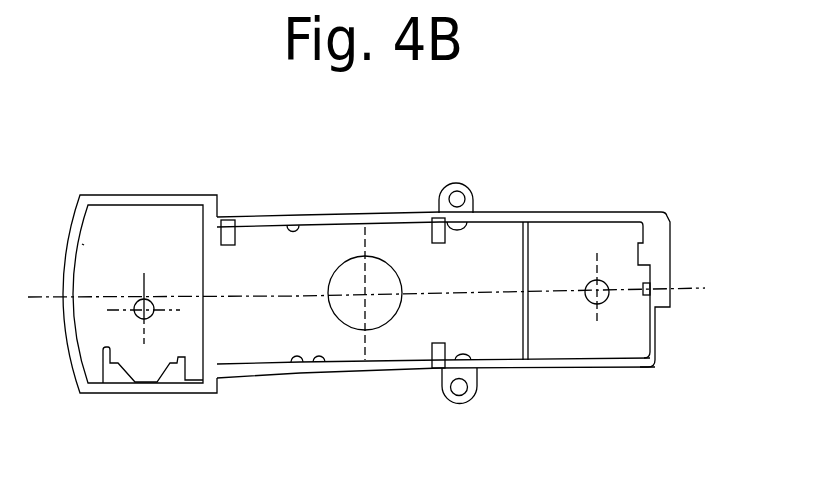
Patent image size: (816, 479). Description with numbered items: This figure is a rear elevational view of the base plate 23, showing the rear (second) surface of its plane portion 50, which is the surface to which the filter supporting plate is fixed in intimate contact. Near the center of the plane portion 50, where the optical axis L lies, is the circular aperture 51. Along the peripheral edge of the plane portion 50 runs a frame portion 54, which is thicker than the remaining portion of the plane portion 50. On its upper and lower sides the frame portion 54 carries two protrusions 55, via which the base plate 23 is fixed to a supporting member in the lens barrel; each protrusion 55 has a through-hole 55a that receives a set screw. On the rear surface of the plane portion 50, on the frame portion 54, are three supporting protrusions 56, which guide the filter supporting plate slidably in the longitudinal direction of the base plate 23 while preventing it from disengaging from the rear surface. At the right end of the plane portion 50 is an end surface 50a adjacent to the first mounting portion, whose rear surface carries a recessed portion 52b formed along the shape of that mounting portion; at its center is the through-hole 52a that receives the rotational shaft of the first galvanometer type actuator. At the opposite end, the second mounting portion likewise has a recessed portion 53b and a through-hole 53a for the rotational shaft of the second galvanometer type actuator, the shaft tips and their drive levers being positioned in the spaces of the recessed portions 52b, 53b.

The base plate 23 is at (314, 205).
The plane portion 50 is at (253, 338).
The end surface 50a is at (529, 343).
The circular aperture 51 is at (343, 270).
The through-hole 52a is at (601, 301).
The recessed portion 52b is at (610, 240).
The through-hole 53a is at (149, 315).
The recessed portion 53b is at (145, 225).
The frame portion 54 is at (658, 232).
The protrusion 55 is at (474, 192).
The through-hole 55a is at (459, 192).
The supporting protrusion 56 is at (232, 245).
The optical axis L is at (362, 297).